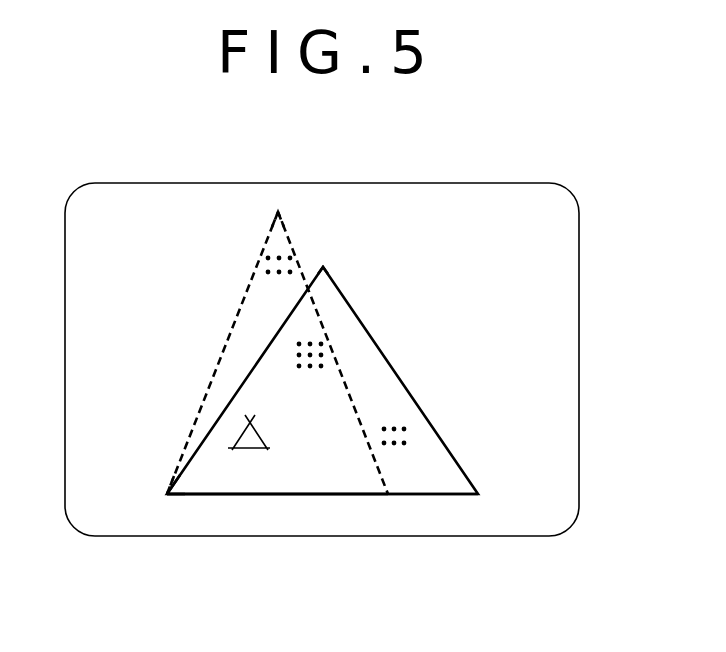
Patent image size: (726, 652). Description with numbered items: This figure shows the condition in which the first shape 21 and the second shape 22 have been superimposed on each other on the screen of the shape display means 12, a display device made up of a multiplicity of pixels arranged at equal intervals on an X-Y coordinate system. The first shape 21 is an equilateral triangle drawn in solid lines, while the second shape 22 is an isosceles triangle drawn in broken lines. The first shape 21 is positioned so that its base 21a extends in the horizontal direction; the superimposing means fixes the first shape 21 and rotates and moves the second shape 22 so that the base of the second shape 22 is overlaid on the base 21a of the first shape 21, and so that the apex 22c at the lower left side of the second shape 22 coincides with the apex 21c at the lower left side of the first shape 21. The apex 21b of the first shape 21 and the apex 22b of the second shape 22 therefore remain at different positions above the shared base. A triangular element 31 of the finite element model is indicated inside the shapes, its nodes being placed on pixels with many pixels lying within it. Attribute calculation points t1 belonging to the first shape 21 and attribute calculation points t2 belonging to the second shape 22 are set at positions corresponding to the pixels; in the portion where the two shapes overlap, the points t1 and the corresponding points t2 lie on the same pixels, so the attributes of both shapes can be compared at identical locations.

The shape display means 12 is at (366, 183).
The first shape 21 is at (377, 341).
The second shape 22 is at (236, 322).
The base of the first shape 21a is at (316, 495).
The apex of first region 21b is at (325, 267).
The apex of second region 22b is at (278, 211).
The apex of the first shape 21c is at (167, 496).
The apex of the second shape 22c is at (170, 485).
The triangular element 31 is at (233, 436).
The attribute calculation points of the first shape t1 is at (326, 341).
The attribute calculation points of the second shape t2 is at (264, 258).